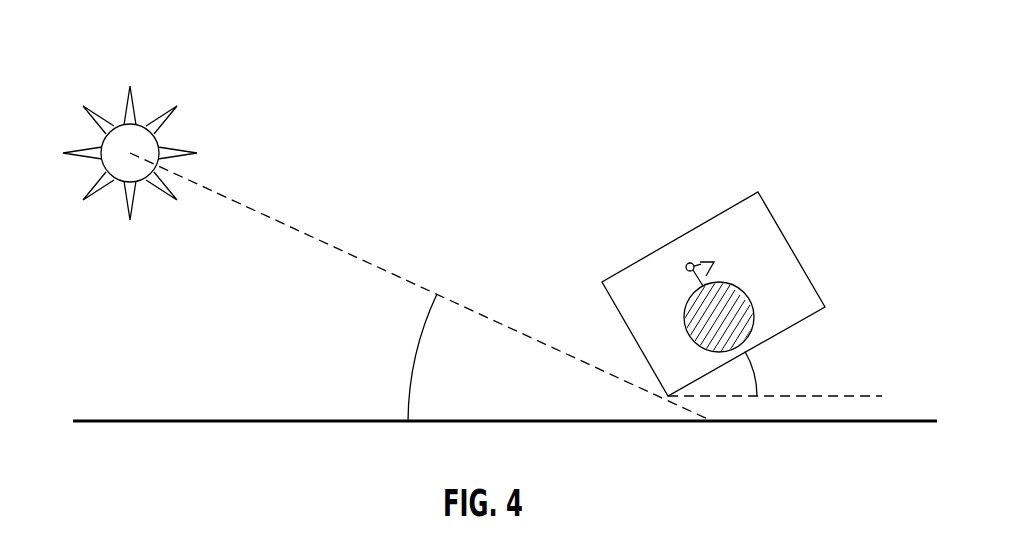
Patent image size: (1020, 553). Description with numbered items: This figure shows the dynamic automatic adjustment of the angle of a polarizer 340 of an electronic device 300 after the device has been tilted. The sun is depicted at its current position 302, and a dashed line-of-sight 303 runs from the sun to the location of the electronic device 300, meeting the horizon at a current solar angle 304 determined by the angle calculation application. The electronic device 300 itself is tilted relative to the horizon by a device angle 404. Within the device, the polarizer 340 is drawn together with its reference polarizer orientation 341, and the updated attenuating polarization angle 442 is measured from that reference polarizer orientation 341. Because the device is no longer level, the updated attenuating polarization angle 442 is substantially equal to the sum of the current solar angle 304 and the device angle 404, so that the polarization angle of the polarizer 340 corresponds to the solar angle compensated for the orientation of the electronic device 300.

The electronic device 300 is at (783, 222).
The current position of the sun 302 is at (130, 153).
The line-of-sight 303 is at (312, 236).
The current solar angle 304 is at (415, 368).
The polarizer 340 is at (753, 298).
The reference polarizer orientation 341 is at (686, 267).
The device angle 404 is at (757, 380).
The updated attenuating polarization angle 442 is at (703, 262).